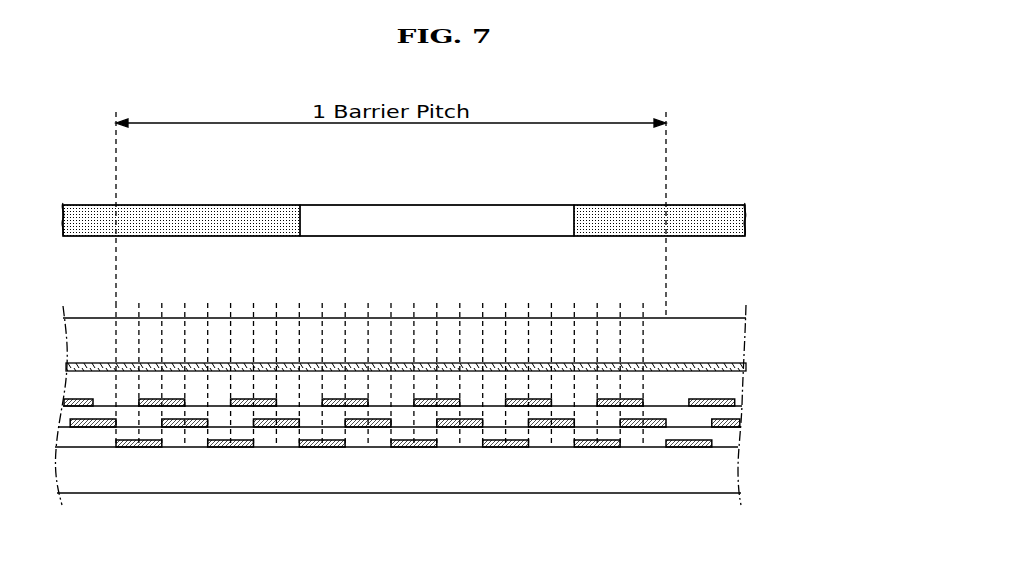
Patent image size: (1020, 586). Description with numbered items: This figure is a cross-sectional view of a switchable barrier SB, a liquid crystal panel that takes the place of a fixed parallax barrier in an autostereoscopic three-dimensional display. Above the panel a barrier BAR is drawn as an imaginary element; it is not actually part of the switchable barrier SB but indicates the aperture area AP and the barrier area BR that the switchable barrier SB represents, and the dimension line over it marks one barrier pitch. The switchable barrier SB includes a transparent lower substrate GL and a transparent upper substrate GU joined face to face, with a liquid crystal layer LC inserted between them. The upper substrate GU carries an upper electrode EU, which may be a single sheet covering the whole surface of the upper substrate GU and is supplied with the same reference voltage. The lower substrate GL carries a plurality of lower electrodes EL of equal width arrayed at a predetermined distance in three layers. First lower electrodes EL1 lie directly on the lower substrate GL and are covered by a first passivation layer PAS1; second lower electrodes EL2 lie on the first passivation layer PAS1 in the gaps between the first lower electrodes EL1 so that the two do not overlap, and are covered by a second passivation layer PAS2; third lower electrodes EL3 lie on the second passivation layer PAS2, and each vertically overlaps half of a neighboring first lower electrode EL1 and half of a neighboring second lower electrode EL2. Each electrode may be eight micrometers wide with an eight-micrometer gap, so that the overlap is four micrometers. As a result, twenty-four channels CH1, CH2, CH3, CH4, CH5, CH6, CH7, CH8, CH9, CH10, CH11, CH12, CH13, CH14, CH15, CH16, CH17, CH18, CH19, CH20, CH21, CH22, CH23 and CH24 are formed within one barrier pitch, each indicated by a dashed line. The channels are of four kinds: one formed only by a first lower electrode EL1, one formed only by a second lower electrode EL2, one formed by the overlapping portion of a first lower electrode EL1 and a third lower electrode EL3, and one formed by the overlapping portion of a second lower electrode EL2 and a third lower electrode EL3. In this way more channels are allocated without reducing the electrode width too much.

The barrier BAR is at (755, 221).
The barrier area BR is at (627, 210).
The aperture area AP is at (406, 212).
The channel CH1 is at (127, 365).
The channel CH2 is at (150, 345).
The channel CH3 is at (173, 355).
The channel CH4 is at (196, 365).
The channel CH5 is at (219, 345).
The channel CH6 is at (242, 355).
The channel CH7 is at (265, 365).
The channel CH8 is at (288, 345).
The channel CH9 is at (311, 355).
The channel CH10 is at (333, 365).
The channel CH11 is at (356, 345).
The channel CH12 is at (379, 355).
The channel CH13 is at (402, 365).
The channel CH14 is at (425, 345).
The channel CH15 is at (448, 355).
The channel CH16 is at (471, 365).
The channel CH17 is at (494, 345).
The channel CH18 is at (517, 355).
The channel CH19 is at (540, 365).
The channel CH20 is at (563, 345).
The channel CH21 is at (586, 355).
The channel CH22 is at (609, 365).
The channel CH23 is at (632, 345).
The channel CH24 is at (655, 355).
The upper substrate GU is at (740, 338).
The upper electrode EU is at (745, 368).
The liquid crystal layer LC is at (735, 390).
The switchable barrier SB is at (748, 456).
The lower substrate GL is at (353, 478).
The first passivation layer PAS1 is at (450, 447).
The second passivation layer PAS2 is at (518, 441).
The first lower electrode EL1 is at (153, 447).
The second lower electrode EL2 is at (196, 427).
The third lower electrode EL3 is at (243, 406).
The lower electrodes EL is at (262, 547).